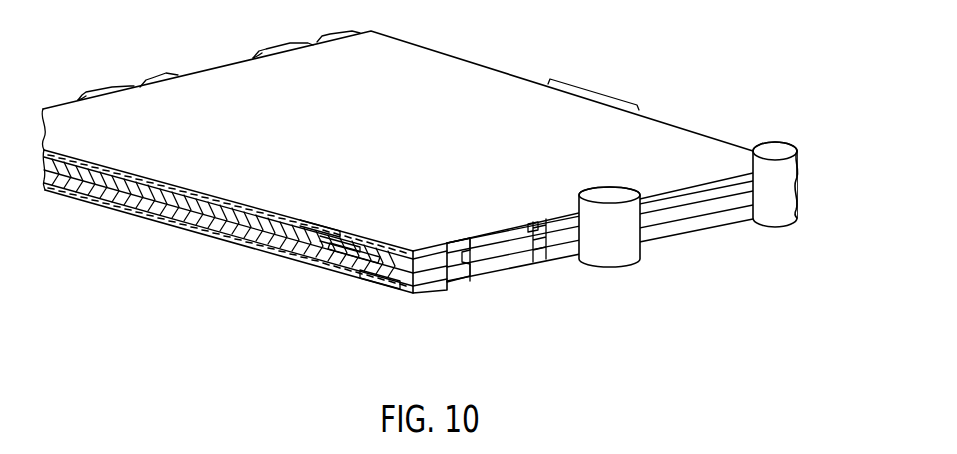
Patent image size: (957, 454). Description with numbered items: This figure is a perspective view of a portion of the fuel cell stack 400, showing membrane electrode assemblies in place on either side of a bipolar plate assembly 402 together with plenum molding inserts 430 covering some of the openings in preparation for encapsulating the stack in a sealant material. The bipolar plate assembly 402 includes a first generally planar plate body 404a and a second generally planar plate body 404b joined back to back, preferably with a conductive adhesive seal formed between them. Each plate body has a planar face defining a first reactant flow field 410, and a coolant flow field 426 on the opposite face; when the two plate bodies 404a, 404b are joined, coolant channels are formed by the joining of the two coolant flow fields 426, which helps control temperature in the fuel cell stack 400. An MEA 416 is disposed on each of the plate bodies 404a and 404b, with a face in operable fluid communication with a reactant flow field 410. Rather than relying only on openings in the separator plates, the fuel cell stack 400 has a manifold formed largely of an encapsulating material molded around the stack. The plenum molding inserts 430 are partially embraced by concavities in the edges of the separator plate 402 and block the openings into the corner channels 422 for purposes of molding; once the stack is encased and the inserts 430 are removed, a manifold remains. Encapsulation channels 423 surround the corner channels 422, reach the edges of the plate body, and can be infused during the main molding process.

The fuel cell stack 400 is at (673, 267).
The bipolar plate assembly 402 is at (681, 213).
The first generally planar plate body 404a is at (389, 292).
The second generally planar plate body 404b is at (246, 238).
The first reactant flow field 410 is at (336, 238).
The MEA 416 is at (453, 163).
The corner channels 422 is at (447, 288).
The encapsulation channels 423 is at (344, 266).
The coolant flow field 426 is at (318, 228).
The plenum molding inserts 430 is at (612, 192).